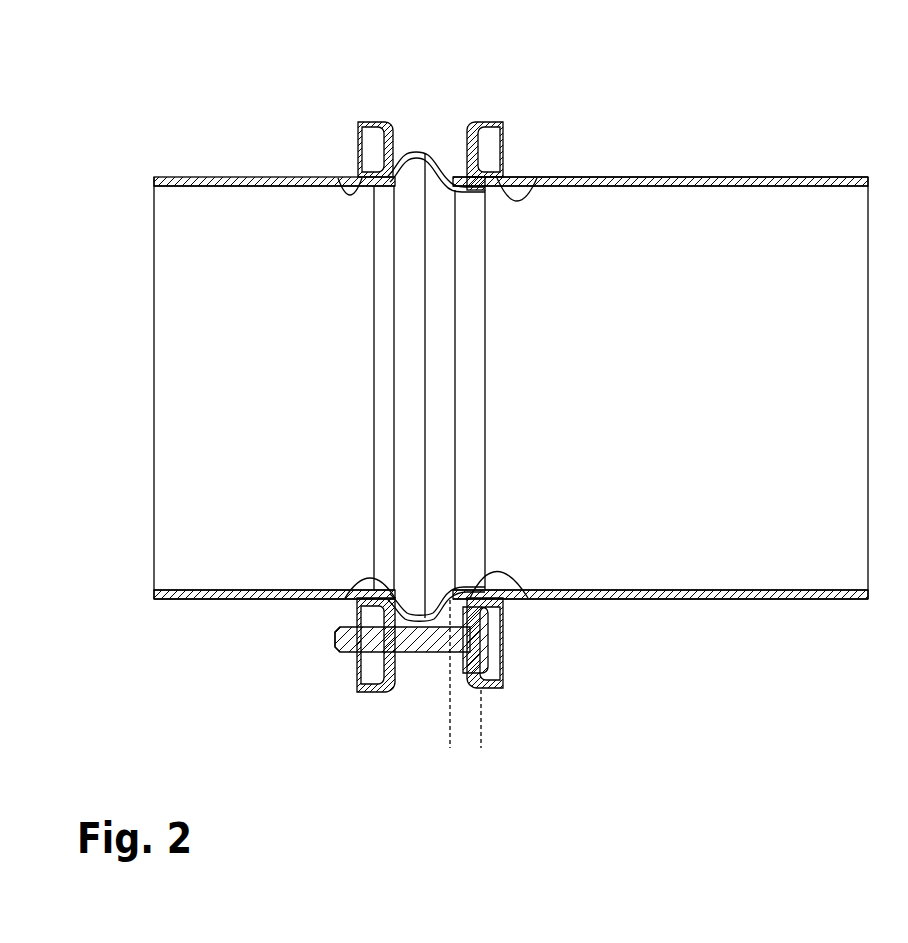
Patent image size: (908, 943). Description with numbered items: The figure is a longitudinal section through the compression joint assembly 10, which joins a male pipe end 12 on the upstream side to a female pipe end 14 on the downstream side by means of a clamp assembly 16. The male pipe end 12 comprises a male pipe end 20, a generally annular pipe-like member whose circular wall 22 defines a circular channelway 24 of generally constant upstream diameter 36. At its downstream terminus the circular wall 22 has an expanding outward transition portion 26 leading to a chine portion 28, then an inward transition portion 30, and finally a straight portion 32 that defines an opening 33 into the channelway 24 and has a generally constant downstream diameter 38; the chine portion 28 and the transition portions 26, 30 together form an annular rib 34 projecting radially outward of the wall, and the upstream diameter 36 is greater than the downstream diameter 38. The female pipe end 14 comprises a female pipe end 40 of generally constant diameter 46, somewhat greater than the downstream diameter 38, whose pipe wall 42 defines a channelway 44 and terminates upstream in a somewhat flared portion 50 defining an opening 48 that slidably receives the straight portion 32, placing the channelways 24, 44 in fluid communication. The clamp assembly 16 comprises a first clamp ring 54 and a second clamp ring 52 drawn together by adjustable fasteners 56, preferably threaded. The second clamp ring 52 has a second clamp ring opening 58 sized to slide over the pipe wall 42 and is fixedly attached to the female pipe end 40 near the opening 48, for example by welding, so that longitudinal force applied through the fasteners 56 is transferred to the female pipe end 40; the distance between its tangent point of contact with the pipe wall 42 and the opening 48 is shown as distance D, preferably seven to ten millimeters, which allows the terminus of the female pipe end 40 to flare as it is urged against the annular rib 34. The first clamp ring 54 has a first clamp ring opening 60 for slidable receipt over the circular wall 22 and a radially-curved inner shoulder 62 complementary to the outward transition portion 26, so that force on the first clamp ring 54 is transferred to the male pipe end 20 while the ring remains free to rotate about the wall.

The compression joint assembly 10 is at (566, 80).
The male pipe end 12 is at (243, 176).
The female pipe end 14 is at (676, 177).
The clamp assembly 16 is at (436, 422).
The male pipe end 20 is at (247, 598).
The circular wall 22 is at (180, 598).
The circular channelway 24 is at (180, 452).
The outward transition portion 26 is at (345, 600).
The chine portion 28 is at (400, 652).
The inward transition portion 30 is at (455, 615).
The straight portion 32 is at (525, 604).
The opening 33 is at (500, 196).
The annular rib 34 is at (425, 150).
The upstream diameter 36 is at (228, 590).
The downstream diameter 38 is at (471, 590).
The female pipe end 40 is at (763, 598).
The pipe wall 42 is at (808, 177).
The channelway 44 is at (745, 405).
The diameter 46 is at (613, 590).
The opening 48 is at (453, 177).
The flared portion 50 is at (458, 165).
The second clamp ring 52 is at (490, 692).
The first clamp ring 54 is at (360, 692).
The adjustable fastener 56 is at (335, 651).
The second clamp ring opening 58 is at (520, 196).
The first clamp ring opening 60 is at (340, 186).
The inner shoulder 62 is at (359, 122).
The distance D is at (450, 743).